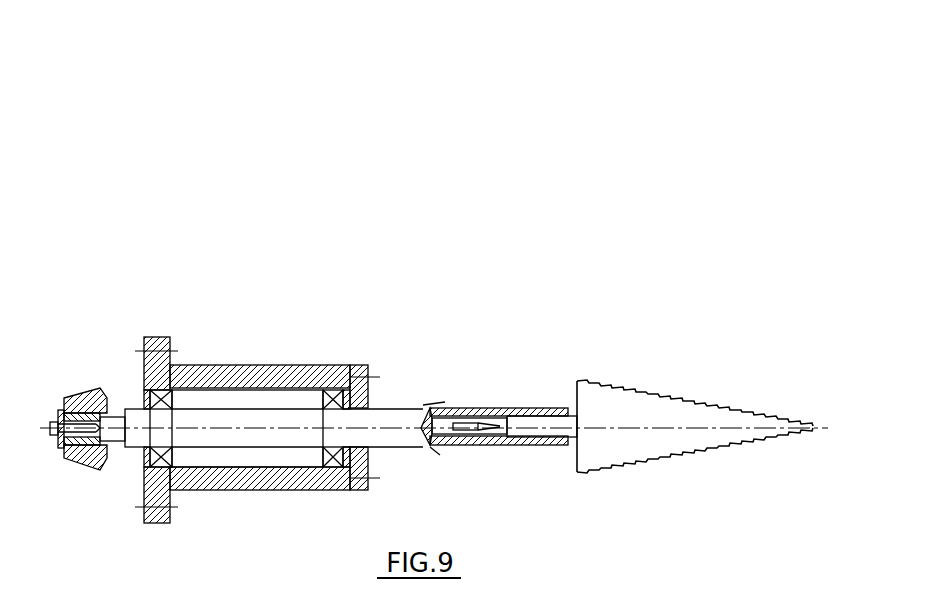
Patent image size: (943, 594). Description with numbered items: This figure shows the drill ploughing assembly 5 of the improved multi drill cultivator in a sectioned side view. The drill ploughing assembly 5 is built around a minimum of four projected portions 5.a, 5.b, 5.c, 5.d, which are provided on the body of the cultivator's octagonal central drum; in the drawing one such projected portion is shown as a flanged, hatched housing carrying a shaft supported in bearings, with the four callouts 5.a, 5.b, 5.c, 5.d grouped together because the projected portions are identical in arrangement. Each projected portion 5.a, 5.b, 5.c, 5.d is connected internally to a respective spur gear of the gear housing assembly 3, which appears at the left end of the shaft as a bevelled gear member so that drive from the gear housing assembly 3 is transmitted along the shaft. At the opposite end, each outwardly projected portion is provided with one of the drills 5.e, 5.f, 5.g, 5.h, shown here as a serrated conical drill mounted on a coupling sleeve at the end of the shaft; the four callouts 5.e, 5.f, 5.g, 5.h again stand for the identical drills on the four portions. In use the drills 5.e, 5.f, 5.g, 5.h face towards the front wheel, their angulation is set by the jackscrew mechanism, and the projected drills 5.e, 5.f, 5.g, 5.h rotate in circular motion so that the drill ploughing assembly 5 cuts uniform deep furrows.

The drill ploughing assembly 5 is at (434, 225).
The gear housing assembly 3 is at (84, 389).
The projected portion 5.a is at (249, 357).
The projected portion 5.b is at (251, 365).
The projected portion 5.c is at (352, 365).
The projected portion 5.d is at (381, 376).
The drill 5.e is at (661, 388).
The drill 5.f is at (587, 372).
The drill 5.g is at (608, 363).
The drill 5.h is at (633, 360).